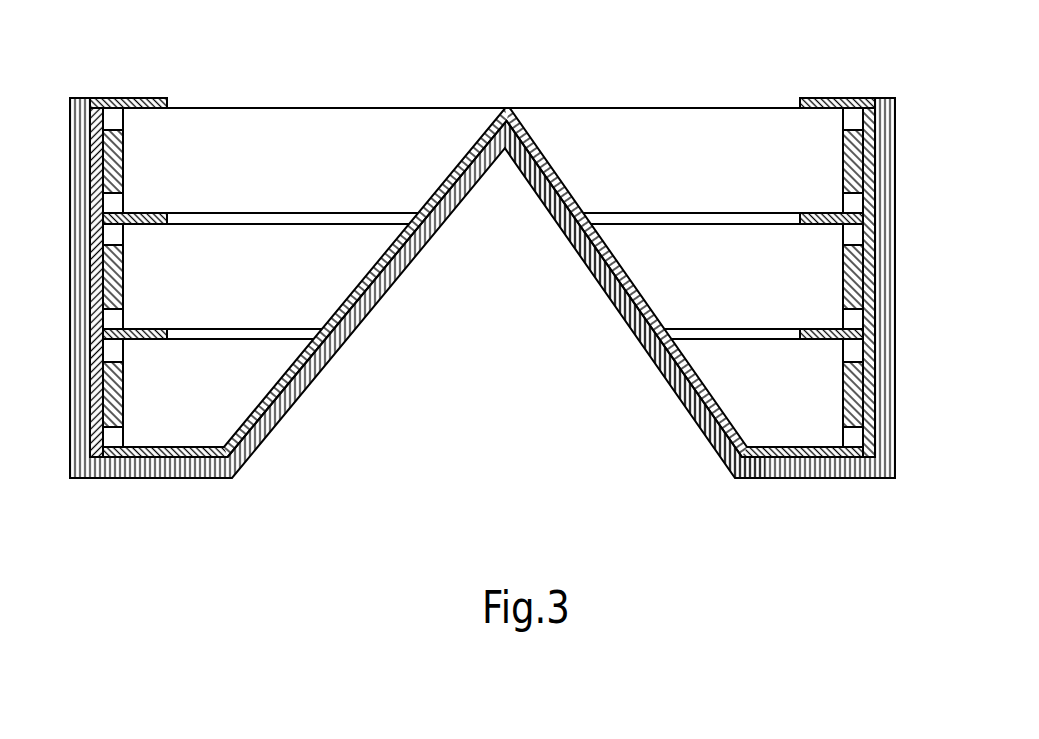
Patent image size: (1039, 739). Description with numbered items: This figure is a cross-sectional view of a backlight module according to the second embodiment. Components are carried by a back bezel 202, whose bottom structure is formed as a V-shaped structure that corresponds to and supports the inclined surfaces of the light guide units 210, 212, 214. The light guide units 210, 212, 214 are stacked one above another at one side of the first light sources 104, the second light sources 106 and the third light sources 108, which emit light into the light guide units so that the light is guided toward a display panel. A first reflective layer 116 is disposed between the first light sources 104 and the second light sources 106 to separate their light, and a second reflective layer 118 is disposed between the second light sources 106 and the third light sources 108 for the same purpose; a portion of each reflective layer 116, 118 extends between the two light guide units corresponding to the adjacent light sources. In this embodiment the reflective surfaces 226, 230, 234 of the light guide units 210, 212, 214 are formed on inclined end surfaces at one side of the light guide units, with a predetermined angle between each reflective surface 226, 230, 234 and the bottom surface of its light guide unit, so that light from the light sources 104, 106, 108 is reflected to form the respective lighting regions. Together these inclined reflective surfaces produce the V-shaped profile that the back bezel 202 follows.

The first light sources 104 is at (866, 384).
The second light sources 106 is at (866, 277).
The third light sources 108 is at (862, 158).
The first reflective layer 116 is at (808, 340).
The second reflective layer 118 is at (800, 213).
The back bezel 202 is at (263, 437).
The first light guide unit 210 is at (250, 407).
The second light guide unit 212 is at (291, 305).
The third light guide unit 214 is at (292, 190).
The reflective surface 226 is at (710, 397).
The reflective surface 230 is at (621, 282).
The reflective surface 234 is at (538, 172).